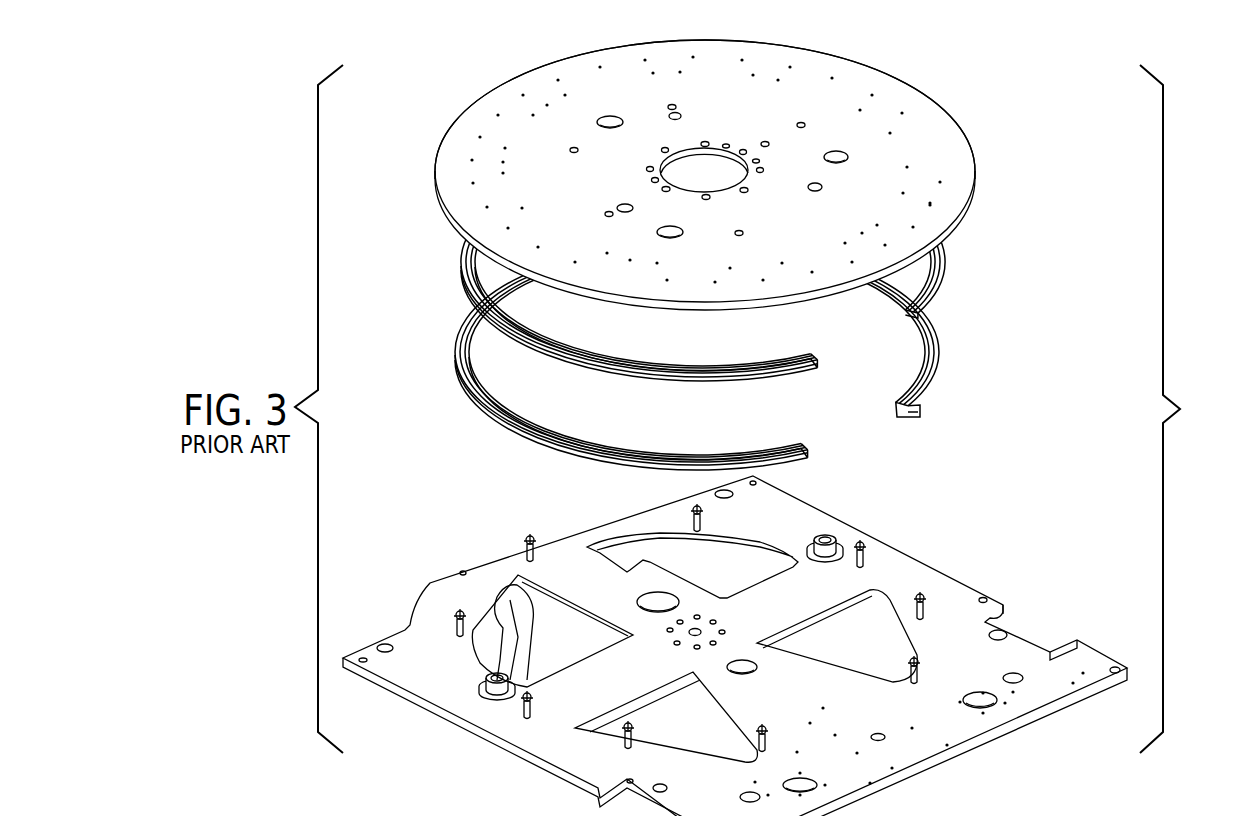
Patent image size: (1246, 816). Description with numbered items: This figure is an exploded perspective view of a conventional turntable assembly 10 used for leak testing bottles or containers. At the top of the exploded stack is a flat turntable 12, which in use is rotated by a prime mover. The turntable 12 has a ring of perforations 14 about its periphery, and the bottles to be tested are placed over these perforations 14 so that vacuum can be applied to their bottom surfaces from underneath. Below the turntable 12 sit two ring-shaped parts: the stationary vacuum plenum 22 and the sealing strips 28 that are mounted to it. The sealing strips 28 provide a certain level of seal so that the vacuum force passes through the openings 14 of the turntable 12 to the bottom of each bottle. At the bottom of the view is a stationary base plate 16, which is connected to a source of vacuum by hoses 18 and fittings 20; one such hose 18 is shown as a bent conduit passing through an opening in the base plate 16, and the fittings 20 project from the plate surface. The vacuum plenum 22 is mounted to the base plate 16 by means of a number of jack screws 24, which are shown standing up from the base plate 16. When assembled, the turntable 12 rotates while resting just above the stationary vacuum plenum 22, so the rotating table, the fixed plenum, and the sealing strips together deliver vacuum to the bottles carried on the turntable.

The turntable assembly 10 is at (754, 409).
The turntable 12 is at (858, 77).
The perforations 14 is at (937, 157).
The base plate 16 is at (933, 580).
The hoses 18 is at (557, 640).
The fittings 20 is at (497, 698).
The vacuum plenum 22 is at (937, 374).
The jack screws 24 is at (458, 613).
The sealing strips 28 is at (945, 278).